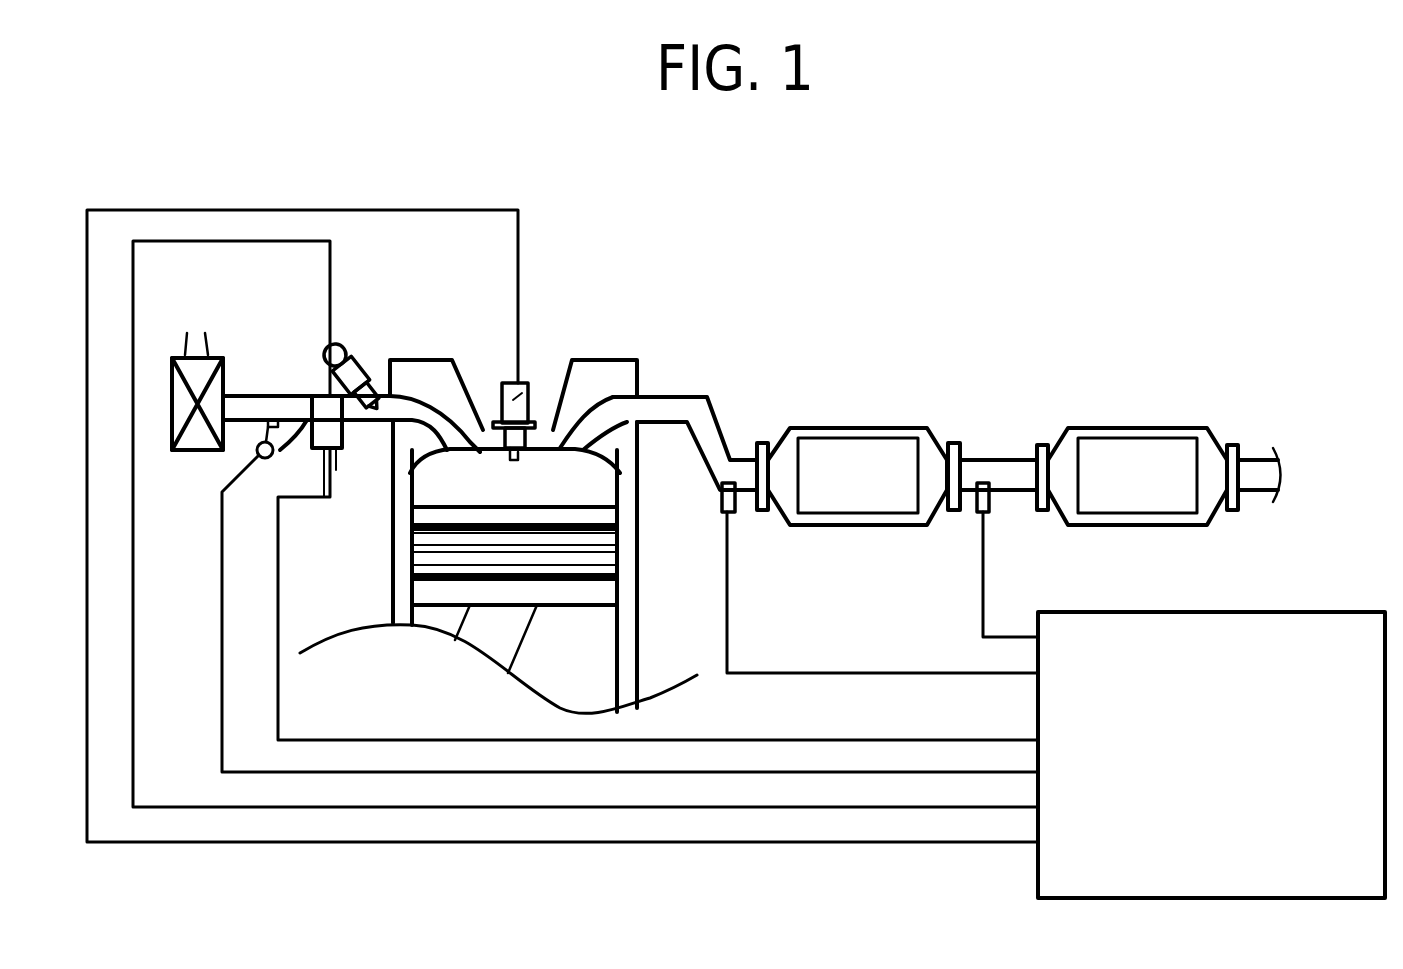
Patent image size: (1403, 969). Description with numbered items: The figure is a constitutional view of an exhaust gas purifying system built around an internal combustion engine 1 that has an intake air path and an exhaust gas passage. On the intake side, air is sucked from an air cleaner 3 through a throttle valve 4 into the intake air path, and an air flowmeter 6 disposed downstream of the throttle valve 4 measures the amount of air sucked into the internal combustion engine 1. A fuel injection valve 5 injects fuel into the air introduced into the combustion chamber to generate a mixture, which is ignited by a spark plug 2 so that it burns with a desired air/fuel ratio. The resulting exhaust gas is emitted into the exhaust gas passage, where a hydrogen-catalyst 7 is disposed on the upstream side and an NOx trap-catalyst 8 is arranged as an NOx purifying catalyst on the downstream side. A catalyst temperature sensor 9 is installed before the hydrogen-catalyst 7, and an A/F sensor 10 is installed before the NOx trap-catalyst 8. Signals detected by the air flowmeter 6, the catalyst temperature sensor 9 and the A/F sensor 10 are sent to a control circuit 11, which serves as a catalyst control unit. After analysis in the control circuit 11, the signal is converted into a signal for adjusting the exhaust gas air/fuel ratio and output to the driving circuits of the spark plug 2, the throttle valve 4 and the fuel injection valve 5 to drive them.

The internal combustion engine 1 is at (627, 557).
The spark plug 2 is at (530, 390).
The air cleaner 3 is at (198, 352).
The throttle valve 4 is at (283, 400).
The fuel injection valve 5 is at (386, 362).
The air flowmeter 6 is at (337, 449).
The hydrogen-catalyst 7 is at (847, 447).
The NOx trap-catalyst 8 is at (1128, 450).
The catalyst temperature sensor 9 is at (733, 470).
The A/F sensor 10 is at (983, 483).
The control circuit 11 is at (1296, 612).